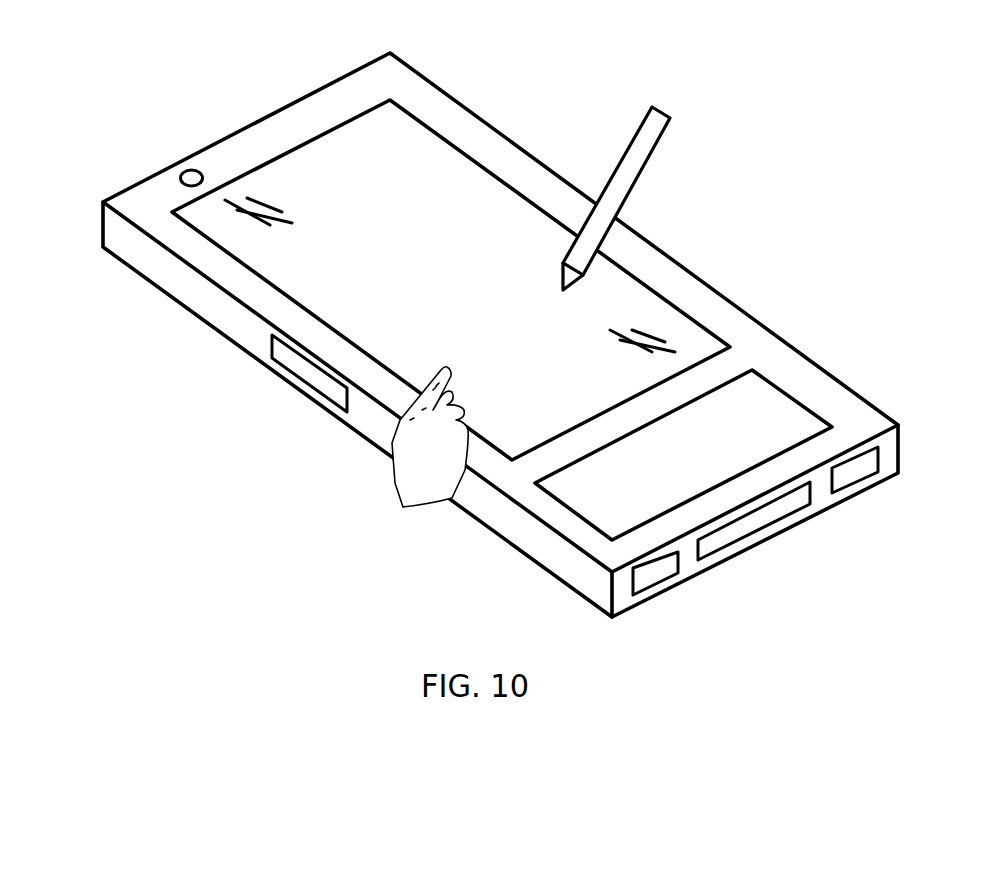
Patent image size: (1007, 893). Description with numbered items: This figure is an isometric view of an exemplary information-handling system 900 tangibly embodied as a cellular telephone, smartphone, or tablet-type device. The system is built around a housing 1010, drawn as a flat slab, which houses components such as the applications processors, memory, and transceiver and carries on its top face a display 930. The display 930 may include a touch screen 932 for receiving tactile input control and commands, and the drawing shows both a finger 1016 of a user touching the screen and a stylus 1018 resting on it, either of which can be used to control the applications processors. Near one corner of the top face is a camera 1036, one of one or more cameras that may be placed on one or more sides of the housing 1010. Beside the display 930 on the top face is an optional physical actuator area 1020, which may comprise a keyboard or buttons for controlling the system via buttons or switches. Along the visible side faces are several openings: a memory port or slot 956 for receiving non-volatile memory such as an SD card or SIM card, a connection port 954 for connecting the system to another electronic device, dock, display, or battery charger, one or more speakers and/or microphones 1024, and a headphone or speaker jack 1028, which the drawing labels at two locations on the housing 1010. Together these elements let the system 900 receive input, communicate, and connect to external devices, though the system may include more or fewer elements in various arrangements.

The information-handling system 900 is at (500, 327).
The housing 1010 is at (337, 80).
The display 930 is at (392, 156).
The touch screen 932 is at (477, 280).
The camera 1036 is at (190, 158).
The headphone or speaker jack 1028 is at (127, 187).
The physical actuator area 1020 is at (768, 415).
The speaker and/or microphone 1024 is at (857, 482).
The connection port 954 is at (768, 527).
The memory port or slot 956 is at (305, 370).
The stylus 1018 is at (638, 140).
The finger 1016 is at (447, 368).